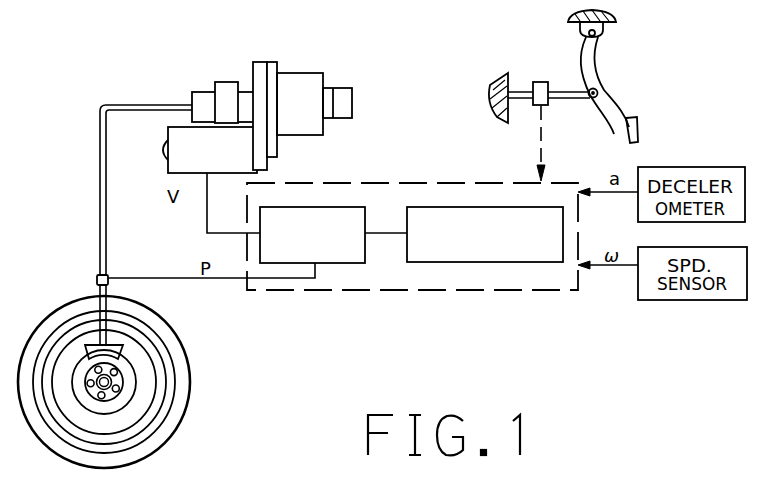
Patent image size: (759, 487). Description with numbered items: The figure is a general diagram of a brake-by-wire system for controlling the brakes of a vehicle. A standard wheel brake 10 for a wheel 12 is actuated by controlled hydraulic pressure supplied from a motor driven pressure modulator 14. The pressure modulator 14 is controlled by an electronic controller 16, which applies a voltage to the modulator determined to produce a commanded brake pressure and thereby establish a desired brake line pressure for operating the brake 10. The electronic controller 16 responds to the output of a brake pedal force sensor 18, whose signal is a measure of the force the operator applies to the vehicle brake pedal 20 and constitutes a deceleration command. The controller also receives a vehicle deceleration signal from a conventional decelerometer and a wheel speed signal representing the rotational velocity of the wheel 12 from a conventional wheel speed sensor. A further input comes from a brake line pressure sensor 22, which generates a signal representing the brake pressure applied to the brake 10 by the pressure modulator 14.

The wheel brake 10 is at (115, 348).
The wheel 12 is at (152, 443).
The pressure modulator 14 is at (242, 82).
The electronic controller 16 is at (388, 293).
The brake pedal force sensor 18 is at (541, 82).
The brake pedal 20 is at (610, 107).
The brake line pressure sensor 22 is at (96, 276).